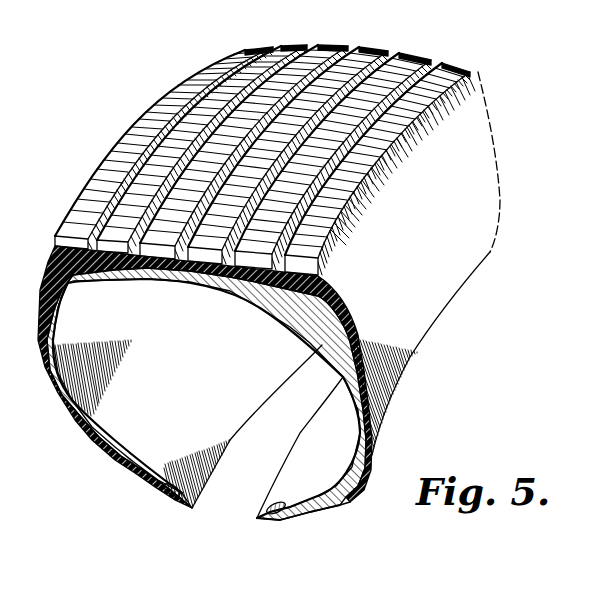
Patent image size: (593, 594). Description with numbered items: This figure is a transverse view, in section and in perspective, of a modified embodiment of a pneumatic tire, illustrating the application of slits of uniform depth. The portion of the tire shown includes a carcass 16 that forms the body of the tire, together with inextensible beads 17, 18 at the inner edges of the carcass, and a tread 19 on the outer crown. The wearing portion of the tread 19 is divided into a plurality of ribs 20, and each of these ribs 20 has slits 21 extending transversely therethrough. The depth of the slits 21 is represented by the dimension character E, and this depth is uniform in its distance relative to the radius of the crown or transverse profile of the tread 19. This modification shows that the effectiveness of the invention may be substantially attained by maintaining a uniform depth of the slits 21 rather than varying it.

The carcass 16 is at (342, 482).
The inextensible bead 17 is at (165, 493).
The inextensible bead 18 is at (262, 522).
The tread 19 is at (140, 281).
The ribs 20 is at (312, 284).
The slits 21 is at (338, 178).
The dimension character for slit depth E is at (197, 283).